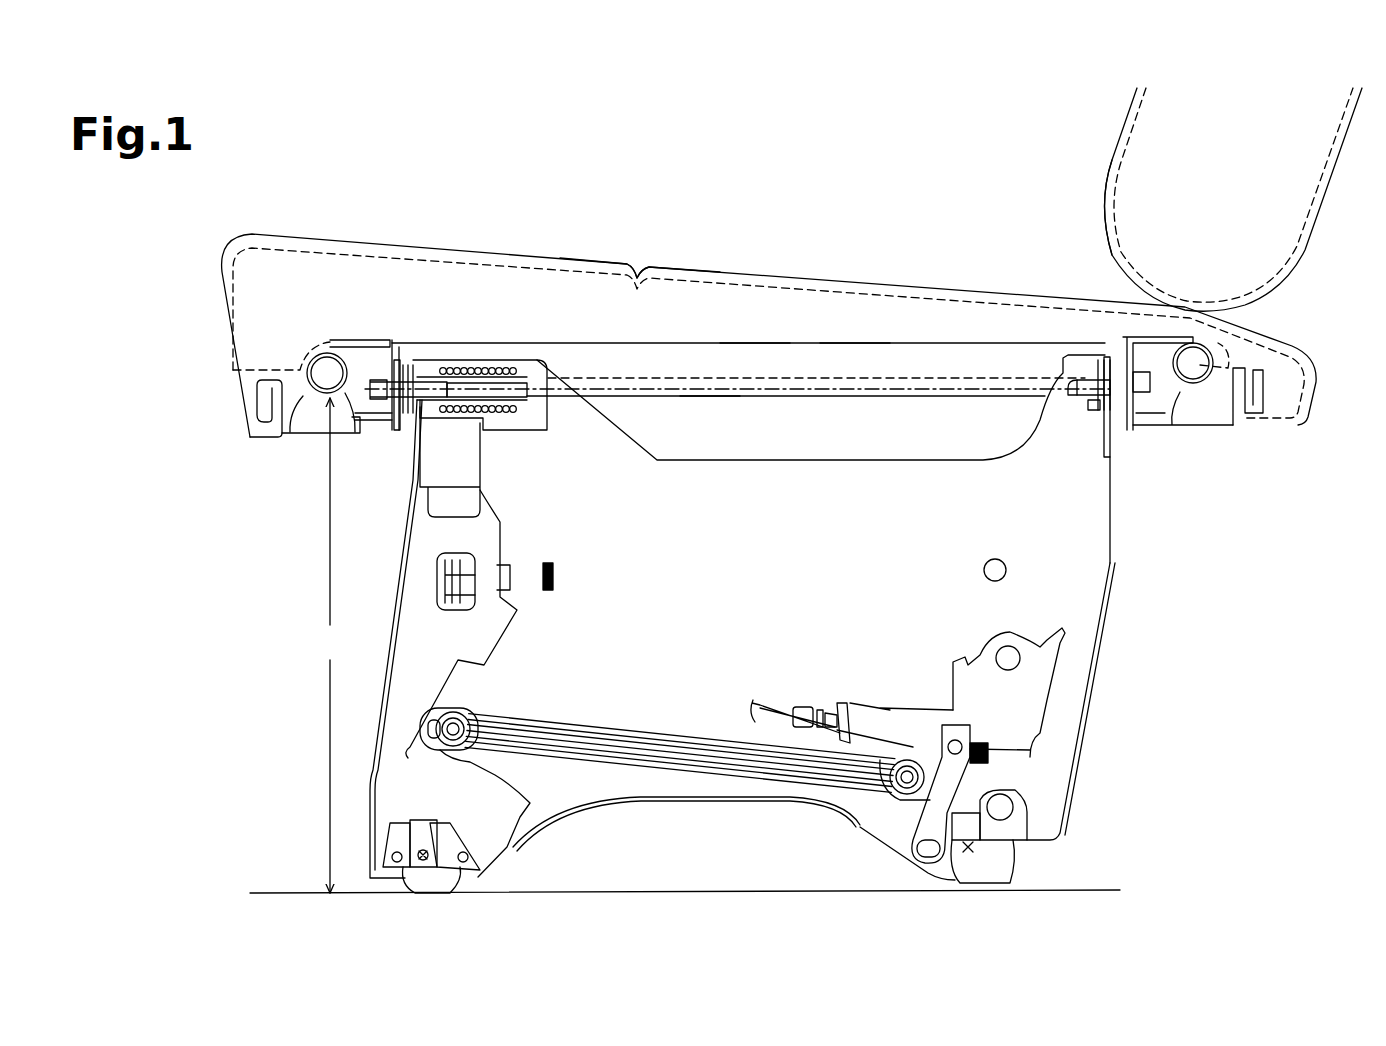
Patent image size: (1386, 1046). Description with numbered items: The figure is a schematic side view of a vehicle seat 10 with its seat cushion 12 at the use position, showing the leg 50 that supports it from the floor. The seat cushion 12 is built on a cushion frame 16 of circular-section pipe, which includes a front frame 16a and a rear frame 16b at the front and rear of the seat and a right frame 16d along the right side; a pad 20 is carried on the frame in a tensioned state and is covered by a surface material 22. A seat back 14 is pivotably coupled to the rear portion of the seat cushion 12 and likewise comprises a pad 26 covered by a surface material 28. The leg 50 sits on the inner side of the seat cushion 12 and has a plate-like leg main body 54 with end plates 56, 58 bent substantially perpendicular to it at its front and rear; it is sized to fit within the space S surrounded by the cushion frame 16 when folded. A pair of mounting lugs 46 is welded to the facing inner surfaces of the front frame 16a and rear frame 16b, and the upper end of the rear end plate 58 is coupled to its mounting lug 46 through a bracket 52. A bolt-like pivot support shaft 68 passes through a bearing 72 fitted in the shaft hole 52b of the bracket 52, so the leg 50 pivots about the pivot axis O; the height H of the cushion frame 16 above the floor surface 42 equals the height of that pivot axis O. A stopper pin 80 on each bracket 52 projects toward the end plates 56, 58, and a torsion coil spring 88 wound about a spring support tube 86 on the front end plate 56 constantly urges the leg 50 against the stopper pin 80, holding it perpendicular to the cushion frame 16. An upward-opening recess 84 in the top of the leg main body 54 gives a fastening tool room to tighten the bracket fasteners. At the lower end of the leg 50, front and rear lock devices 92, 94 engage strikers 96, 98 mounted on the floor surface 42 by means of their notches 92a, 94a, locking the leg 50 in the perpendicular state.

The vehicle seat 10 is at (573, 141).
The seat cushion 12 is at (462, 242).
The seat back 14 is at (1118, 108).
The cushion frame 16 is at (672, 348).
The front frame 16a is at (307, 398).
The rear frame 16b is at (1208, 390).
The right frame 16d is at (749, 348).
The pad 20 is at (531, 262).
The surface material 22 is at (597, 262).
The pad 26 is at (1115, 150).
The surface material 28 is at (1101, 186).
The floor surface 42 is at (698, 892).
The mounting lug 46 is at (356, 340).
The leg 50 is at (1113, 502).
The bracket 52 is at (397, 431).
The shaft hole 52b is at (1085, 378).
The leg main body 54 is at (688, 566).
The end plate 56 is at (399, 574).
The end plate 58 is at (1116, 553).
The pivot support shaft 68 is at (367, 416).
The bearing 72 is at (1090, 378).
The stopper pin 80 is at (442, 428).
The recess 84 is at (795, 460).
The spring support tube 86 is at (520, 360).
The torsion coil spring 88 is at (447, 363).
The lock device 92 is at (506, 866).
The notch 92a is at (448, 888).
The lock device 94 is at (1038, 881).
The notch 94a is at (1000, 882).
The striker 96 is at (422, 863).
The striker 98 is at (964, 863).
The height H is at (328, 645).
The pivot axis O is at (709, 397).
The space S is at (852, 348).